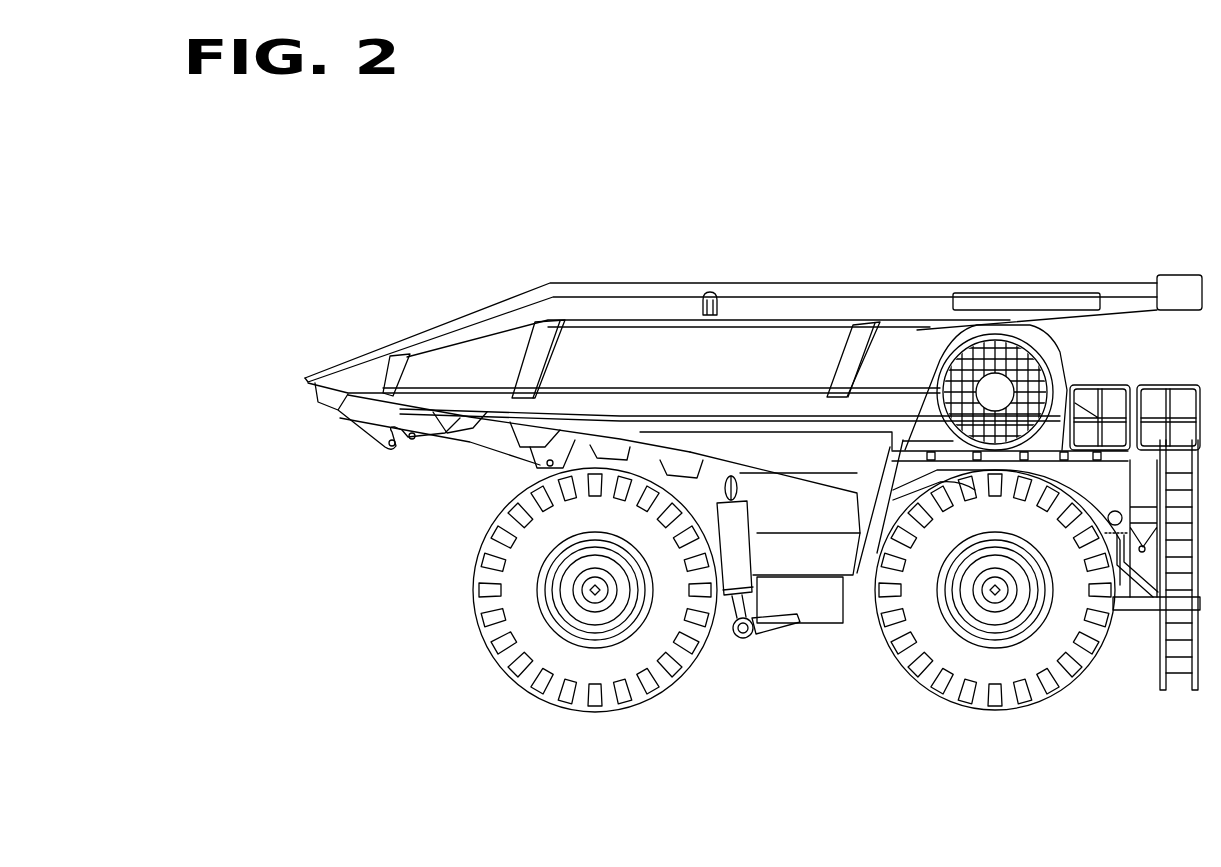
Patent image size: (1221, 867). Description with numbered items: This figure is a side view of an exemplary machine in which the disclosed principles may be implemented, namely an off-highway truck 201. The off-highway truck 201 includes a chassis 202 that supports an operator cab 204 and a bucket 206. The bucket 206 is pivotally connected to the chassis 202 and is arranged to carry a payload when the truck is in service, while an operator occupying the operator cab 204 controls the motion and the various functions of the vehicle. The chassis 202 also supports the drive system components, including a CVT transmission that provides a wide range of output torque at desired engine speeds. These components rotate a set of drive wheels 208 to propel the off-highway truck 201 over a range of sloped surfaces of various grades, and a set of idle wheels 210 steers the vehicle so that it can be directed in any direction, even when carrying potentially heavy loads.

The off-highway truck 201 is at (446, 511).
The chassis 202 is at (870, 562).
The operator cab 204 is at (1062, 372).
The bucket 206 is at (617, 308).
The drive wheels 208 is at (640, 653).
The idle wheels 210 is at (982, 653).